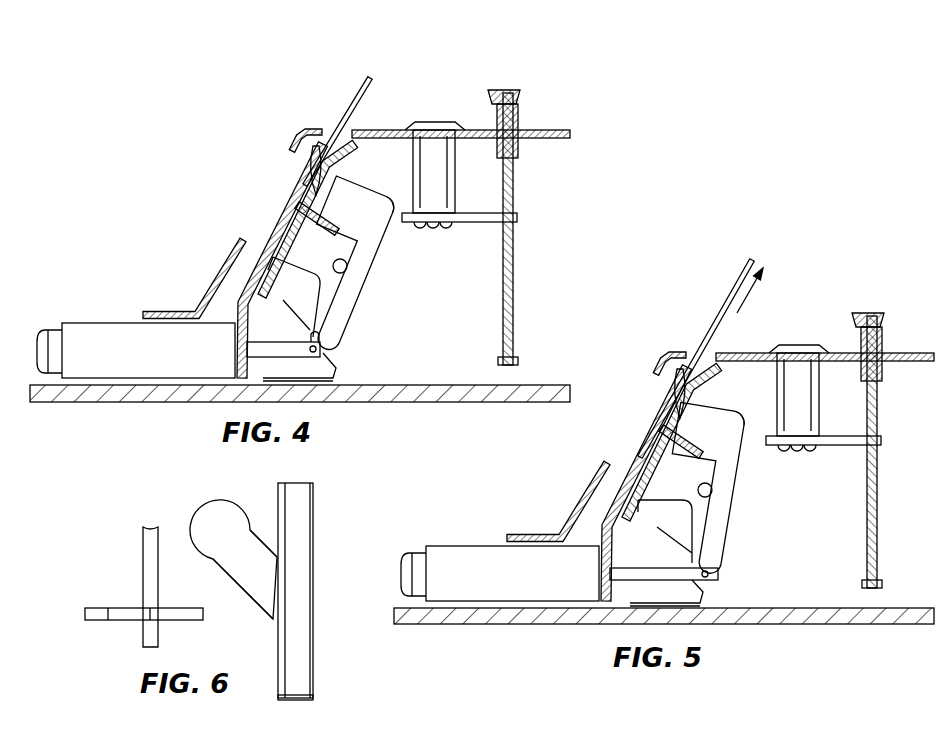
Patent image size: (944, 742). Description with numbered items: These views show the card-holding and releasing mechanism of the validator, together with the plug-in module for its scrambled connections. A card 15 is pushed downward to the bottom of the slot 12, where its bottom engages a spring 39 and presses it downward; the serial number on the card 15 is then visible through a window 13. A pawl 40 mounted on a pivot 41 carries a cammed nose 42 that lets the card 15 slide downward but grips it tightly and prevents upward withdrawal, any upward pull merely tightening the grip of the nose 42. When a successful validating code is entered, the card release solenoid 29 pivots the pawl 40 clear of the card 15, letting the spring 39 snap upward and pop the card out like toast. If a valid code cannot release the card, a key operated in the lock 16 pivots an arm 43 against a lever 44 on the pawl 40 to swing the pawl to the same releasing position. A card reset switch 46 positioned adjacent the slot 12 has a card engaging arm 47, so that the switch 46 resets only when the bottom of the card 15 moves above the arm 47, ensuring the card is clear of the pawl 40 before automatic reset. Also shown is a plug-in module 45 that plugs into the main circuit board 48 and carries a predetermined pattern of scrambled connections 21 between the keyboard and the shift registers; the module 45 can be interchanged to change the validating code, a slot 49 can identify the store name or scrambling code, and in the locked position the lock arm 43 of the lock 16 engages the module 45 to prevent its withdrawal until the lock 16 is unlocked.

In FIG. 4, the slot 12 is at (328, 130).
In FIG. 5, the slot 12 is at (686, 355).
In FIG. 4, the window 13 is at (290, 152).
In FIG. 5, the window 13 is at (652, 372).
In FIG. 4, the card 15 is at (365, 85).
In FIG. 5, the card 15 is at (736, 282).
In FIG. 4, the lock 16 is at (440, 135).
In FIG. 5, the lock 16 is at (805, 358).
In FIG. 6, the lock 16 is at (222, 512).
In FIG. 4, the scrambled connections 21 is at (512, 285).
In FIG. 5, the scrambled connections 21 is at (876, 500).
In FIG. 4, the card release solenoid 29 is at (90, 323).
In FIG. 5, the card release solenoid 29 is at (450, 548).
In FIG. 4, the spring 39 is at (285, 318).
In FIG. 5, the spring 39 is at (660, 528).
In FIG. 4, the pawl 40 is at (318, 258).
In FIG. 5, the pawl 40 is at (677, 496).
In FIG. 4, the pivot 41 is at (347, 266).
In FIG. 5, the pivot 41 is at (712, 490).
In FIG. 4, the cammed nose 42 is at (280, 215).
In FIG. 5, the cammed nose 42 is at (643, 448).
In FIG. 4, the arm 43 is at (460, 215).
In FIG. 5, the arm 43 is at (832, 445).
In FIG. 6, the arm 43 is at (248, 585).
In FIG. 4, the lever 44 is at (365, 200).
In FIG. 5, the lever 44 is at (733, 407).
In FIG. 6, the lever 44 is at (185, 608).
In FIG. 4, the plug-in module 45 is at (520, 108).
In FIG. 5, the plug-in module 45 is at (882, 340).
In FIG. 6, the plug-in module 45 is at (313, 560).
In FIG. 4, the card reset switch 46 is at (385, 215).
In FIG. 5, the card reset switch 46 is at (740, 432).
In FIG. 4, the card engaging arm 47 is at (300, 172).
In FIG. 5, the card engaging arm 47 is at (672, 408).
In FIG. 4, the main circuit board 48 is at (404, 385).
In FIG. 5, the main circuit board 48 is at (835, 609).
In FIG. 4, the slot 49 is at (500, 90).
In FIG. 5, the slot 49 is at (864, 316).
In FIG. 6, the slot 49 is at (302, 523).